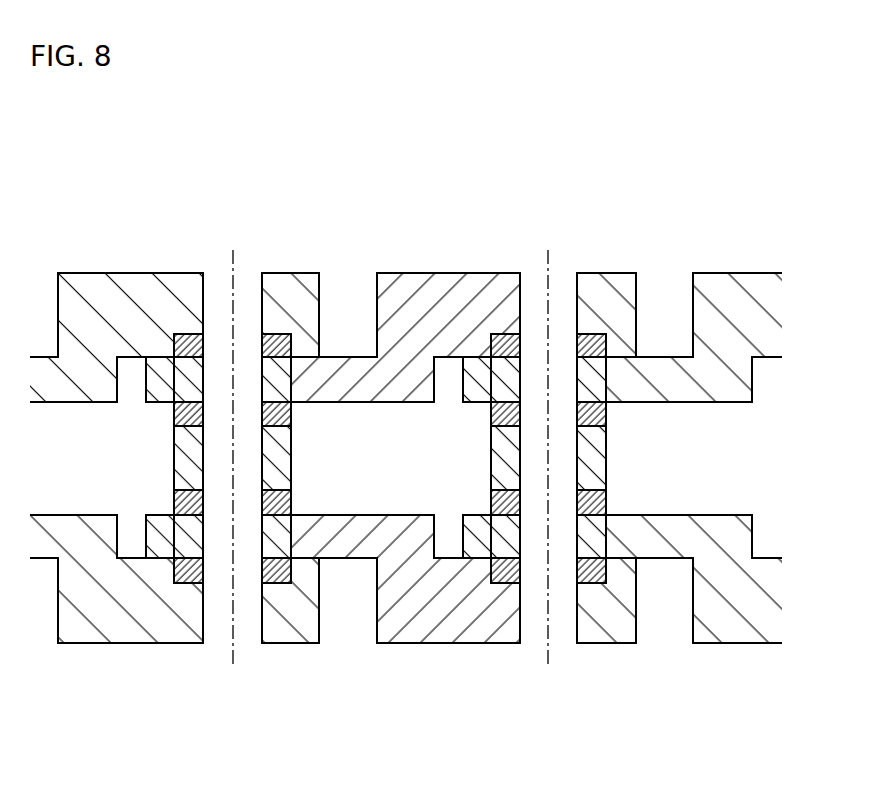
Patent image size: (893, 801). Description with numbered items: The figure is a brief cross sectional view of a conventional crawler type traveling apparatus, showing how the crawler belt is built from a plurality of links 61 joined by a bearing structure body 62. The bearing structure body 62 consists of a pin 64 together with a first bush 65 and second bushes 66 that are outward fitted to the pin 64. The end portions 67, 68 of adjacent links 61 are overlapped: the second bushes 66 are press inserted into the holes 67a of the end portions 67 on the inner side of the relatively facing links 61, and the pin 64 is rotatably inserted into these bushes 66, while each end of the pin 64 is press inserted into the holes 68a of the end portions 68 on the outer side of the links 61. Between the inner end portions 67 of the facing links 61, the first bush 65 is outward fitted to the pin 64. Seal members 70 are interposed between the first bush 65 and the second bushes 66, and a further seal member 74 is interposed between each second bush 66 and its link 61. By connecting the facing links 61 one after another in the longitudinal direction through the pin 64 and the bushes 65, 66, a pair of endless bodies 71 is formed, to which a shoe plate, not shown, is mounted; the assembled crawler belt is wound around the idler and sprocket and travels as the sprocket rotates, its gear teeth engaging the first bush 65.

The link 61 is at (126, 262).
The bearing structure body 62 is at (415, 458).
The pin 64 is at (245, 472).
The first bush 65 is at (290, 433).
The second bush 66 is at (294, 350).
The end portion 67 is at (155, 518).
The hole 67a is at (185, 528).
The end portion 68 is at (283, 290).
The hole 68a is at (205, 312).
The seal member 70 is at (292, 500).
The endless body 71 is at (421, 472).
The seal member 74 is at (406, 473).